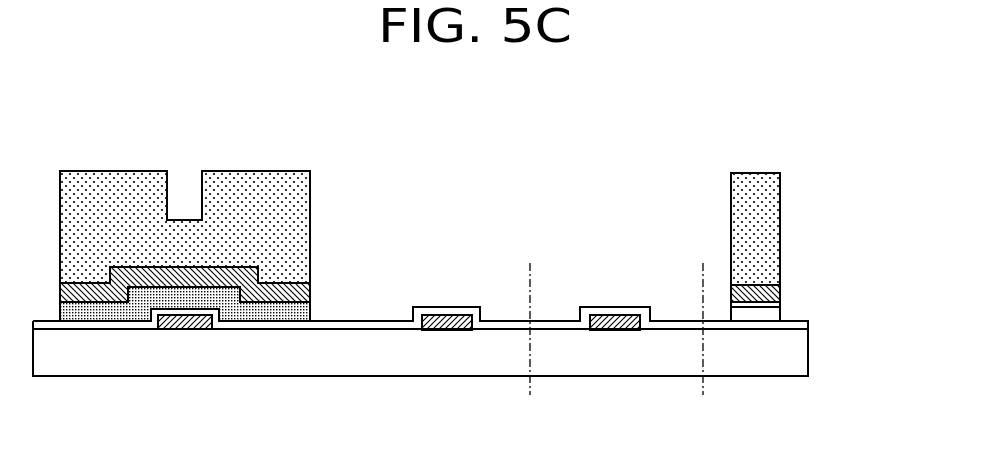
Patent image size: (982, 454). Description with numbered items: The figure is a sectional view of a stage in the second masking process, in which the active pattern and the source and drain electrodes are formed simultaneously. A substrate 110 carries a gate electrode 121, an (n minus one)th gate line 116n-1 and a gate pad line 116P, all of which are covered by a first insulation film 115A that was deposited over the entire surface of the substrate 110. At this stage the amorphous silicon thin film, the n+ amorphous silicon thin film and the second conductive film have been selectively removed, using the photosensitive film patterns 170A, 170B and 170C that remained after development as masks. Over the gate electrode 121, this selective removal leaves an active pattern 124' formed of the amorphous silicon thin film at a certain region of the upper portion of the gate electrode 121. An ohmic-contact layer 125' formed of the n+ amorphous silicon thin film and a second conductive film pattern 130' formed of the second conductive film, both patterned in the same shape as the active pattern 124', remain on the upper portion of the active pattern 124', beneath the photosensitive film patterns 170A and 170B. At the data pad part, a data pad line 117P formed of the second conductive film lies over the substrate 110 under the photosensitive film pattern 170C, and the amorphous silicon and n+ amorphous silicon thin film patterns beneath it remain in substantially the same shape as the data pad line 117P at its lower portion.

The substrate 110 is at (808, 360).
The first insulation film 115A is at (808, 328).
The gate electrode 121 is at (182, 329).
The (n−1)th gate line 116n-1 is at (443, 330).
The gate pad line 116P is at (612, 330).
The active pattern 124' is at (185, 357).
The ohmic-contact layer 125' is at (185, 347).
The second conductive film pattern 130' is at (104, 355).
The photosensitive film pattern 170B is at (103, 178).
The photosensitive film pattern 170A is at (187, 232).
The photosensitive film pattern 170C is at (777, 245).
The data pad line 117P is at (777, 296).